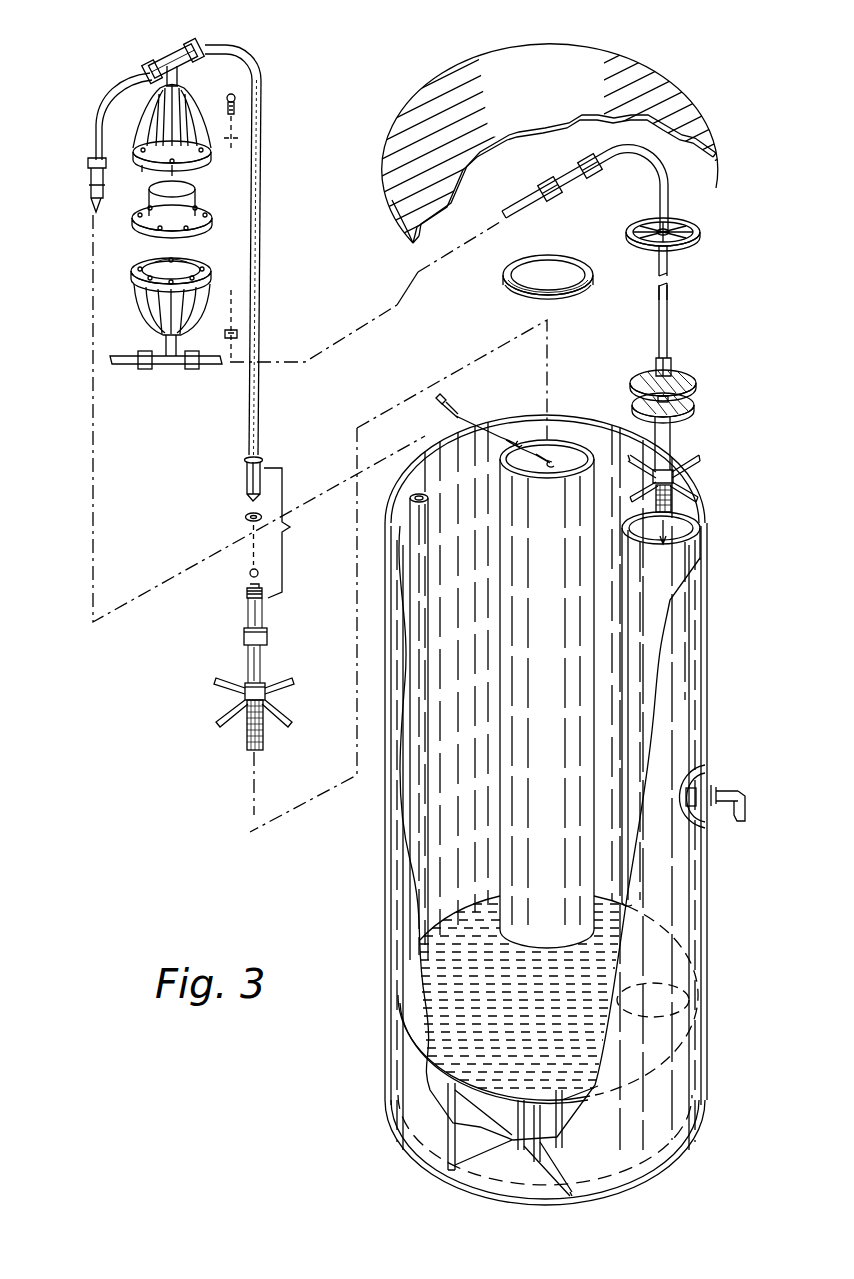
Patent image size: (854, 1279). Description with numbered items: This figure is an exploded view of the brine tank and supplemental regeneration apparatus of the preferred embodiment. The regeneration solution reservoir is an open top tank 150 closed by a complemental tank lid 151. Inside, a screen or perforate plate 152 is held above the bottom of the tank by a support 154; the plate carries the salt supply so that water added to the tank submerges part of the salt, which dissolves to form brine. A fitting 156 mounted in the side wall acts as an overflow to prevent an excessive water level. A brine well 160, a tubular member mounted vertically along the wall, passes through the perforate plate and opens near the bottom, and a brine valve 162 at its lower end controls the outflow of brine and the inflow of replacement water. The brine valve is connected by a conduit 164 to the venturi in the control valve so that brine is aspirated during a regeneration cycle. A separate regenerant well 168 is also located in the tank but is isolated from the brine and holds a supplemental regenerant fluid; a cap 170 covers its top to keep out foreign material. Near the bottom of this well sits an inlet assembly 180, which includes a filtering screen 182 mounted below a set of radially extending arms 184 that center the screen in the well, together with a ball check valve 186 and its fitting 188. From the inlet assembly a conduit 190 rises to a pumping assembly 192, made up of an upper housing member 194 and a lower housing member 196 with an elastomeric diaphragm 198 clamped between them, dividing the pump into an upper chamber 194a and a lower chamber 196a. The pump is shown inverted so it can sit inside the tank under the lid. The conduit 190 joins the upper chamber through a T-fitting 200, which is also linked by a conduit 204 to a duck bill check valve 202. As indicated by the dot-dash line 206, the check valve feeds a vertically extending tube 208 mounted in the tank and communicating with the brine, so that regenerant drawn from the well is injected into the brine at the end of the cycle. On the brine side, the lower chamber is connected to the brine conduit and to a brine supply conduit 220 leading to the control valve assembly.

The tank 150 is at (707, 888).
The tank lid 151 is at (548, 95).
The perforate plate 152 is at (466, 920).
The support 154 is at (563, 1128).
The fitting 156 is at (738, 790).
The brine well 160 is at (687, 556).
The brine valve 162 is at (672, 437).
The conduit 164 is at (672, 190).
The regenerant well 168 is at (513, 566).
The cap 170 is at (555, 272).
The inlet assembly 180 is at (276, 685).
The filtering screen 182 is at (262, 730).
The radially extending arms 184 is at (284, 676).
The ball check valve 186 is at (286, 533).
The fitting 188 is at (263, 468).
The conduit 190 is at (266, 214).
The pumping assembly 192 is at (245, 144).
The upper housing member 194 is at (205, 106).
The upper chamber 194a is at (195, 176).
The lower housing member 196 is at (206, 286).
The lower chamber 196a is at (150, 263).
The elastomeric diaphragm 198 is at (208, 214).
The T-fitting 200 is at (161, 60).
The check valve 202 is at (92, 172).
The conduit 204 is at (112, 95).
The dot-dash line 206 is at (93, 420).
The tube 208 is at (430, 640).
The brine supply conduit 220 is at (125, 366).